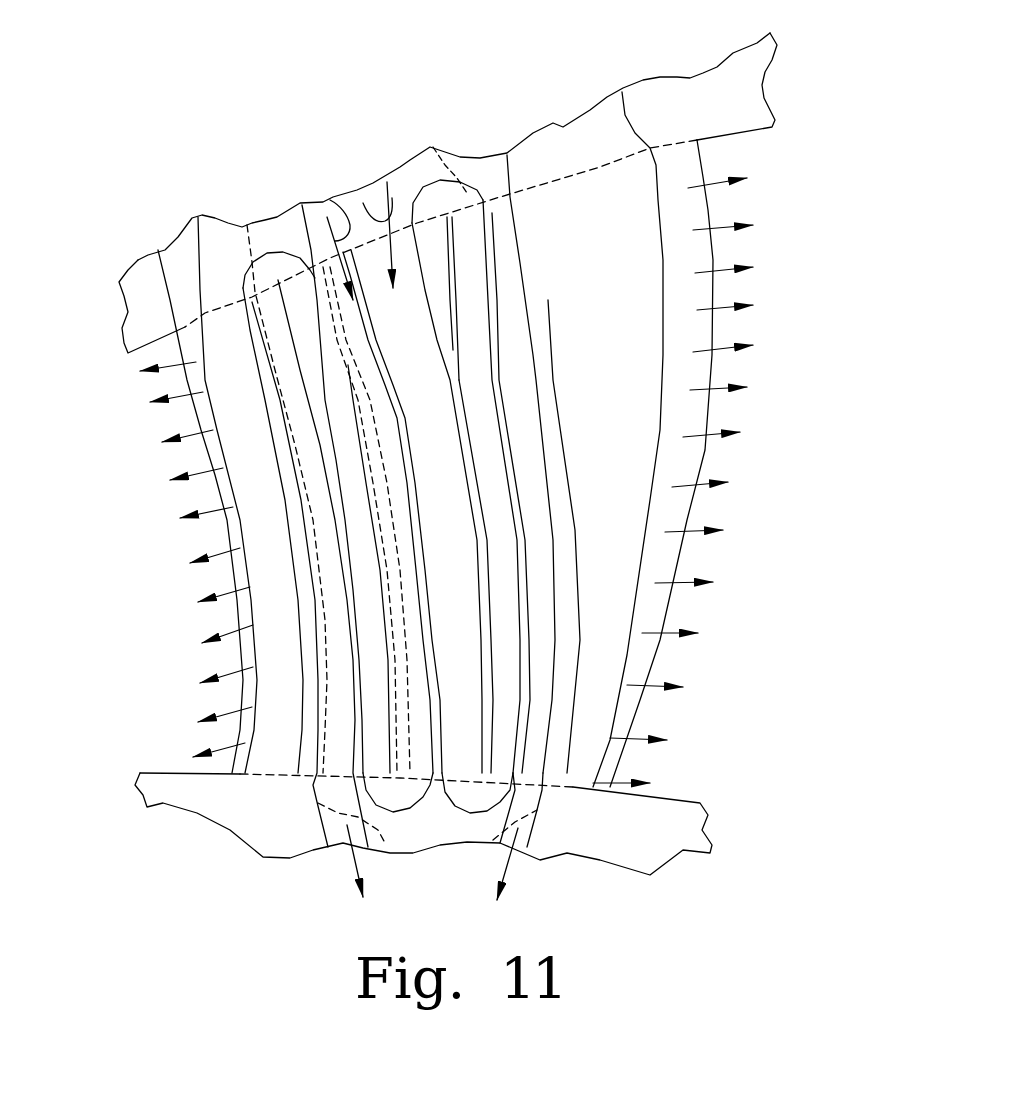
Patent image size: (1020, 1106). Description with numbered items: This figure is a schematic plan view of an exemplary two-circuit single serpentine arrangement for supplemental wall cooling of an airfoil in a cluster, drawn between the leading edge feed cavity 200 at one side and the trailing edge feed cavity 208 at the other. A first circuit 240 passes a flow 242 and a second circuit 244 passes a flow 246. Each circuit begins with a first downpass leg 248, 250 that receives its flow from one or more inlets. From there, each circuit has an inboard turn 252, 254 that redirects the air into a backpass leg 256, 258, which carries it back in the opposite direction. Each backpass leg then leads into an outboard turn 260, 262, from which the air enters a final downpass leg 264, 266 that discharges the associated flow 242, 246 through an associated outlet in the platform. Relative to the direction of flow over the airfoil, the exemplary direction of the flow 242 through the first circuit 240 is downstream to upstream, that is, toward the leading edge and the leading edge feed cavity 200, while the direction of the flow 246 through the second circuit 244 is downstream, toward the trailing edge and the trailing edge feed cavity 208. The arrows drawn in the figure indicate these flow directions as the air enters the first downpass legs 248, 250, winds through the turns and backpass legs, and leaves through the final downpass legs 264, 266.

The leading edge feed cavity 200 is at (222, 350).
The trailing edge feed cavity 208 is at (588, 215).
The first circuit 240 is at (282, 245).
The flow 242 is at (327, 203).
The second circuit 244 is at (427, 175).
The flow 246 is at (365, 203).
The first downpass leg 248 is at (385, 378).
The first downpass leg 250 is at (470, 400).
The inboard turn 252 is at (402, 793).
The inboard turn 254 is at (480, 797).
The backpass leg 256 is at (347, 458).
The backpass leg 258 is at (487, 437).
The outboard turn 260 is at (278, 270).
The outboard turn 262 is at (450, 202).
The final downpass leg 264 is at (273, 350).
The final downpass leg 266 is at (530, 460).